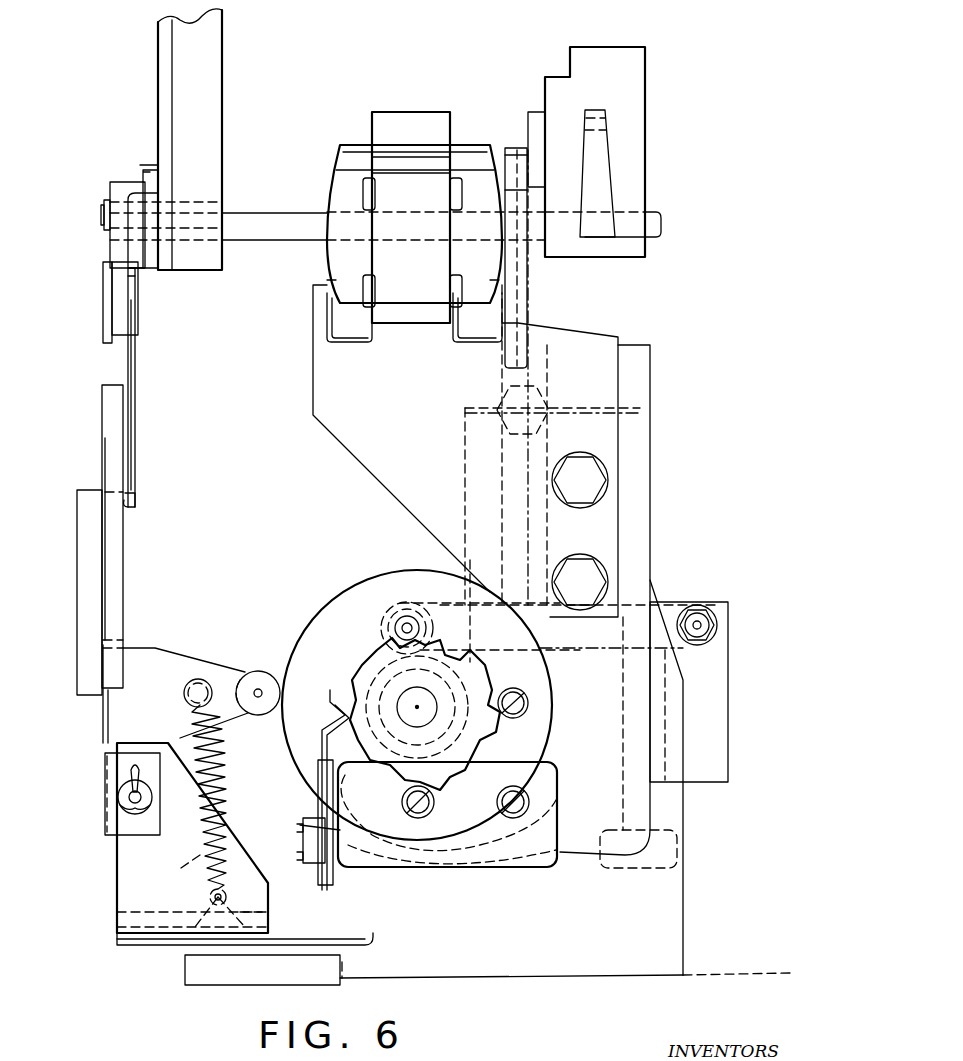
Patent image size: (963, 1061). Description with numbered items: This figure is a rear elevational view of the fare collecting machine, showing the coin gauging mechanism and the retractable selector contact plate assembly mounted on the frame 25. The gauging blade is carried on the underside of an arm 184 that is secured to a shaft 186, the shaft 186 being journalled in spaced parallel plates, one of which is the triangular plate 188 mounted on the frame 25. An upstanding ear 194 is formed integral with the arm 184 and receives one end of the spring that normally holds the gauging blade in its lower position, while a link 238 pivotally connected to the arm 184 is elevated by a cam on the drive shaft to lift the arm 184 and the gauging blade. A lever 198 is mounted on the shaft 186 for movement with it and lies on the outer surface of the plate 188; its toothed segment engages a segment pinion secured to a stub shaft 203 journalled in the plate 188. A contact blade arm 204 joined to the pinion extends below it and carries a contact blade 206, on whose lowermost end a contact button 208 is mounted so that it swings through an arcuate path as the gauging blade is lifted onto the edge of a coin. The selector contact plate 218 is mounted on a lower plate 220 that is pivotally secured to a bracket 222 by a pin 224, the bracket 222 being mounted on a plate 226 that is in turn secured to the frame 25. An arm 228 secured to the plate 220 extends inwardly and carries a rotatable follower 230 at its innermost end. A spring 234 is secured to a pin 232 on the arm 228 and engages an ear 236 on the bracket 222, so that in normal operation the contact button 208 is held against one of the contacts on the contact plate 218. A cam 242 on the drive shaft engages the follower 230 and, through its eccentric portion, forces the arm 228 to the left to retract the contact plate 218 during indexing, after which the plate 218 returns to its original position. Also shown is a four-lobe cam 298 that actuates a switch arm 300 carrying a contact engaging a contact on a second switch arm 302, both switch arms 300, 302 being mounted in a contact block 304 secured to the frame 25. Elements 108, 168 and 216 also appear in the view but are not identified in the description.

The frame 25 is at (192, 968).
The mounting plate 108 is at (313, 360).
The shaft hub 168 is at (425, 712).
The arm 184 is at (628, 98).
The shaft 186 is at (265, 232).
The plate 188 is at (205, 110).
The upstanding ear 194 is at (600, 158).
The lever 198 is at (133, 248).
The stub shaft 203 is at (104, 216).
The contact blade arm 204 is at (118, 305).
The contact blade 206 is at (138, 442).
The contact button 208 is at (128, 506).
The switch assembly 216 is at (52, 471).
The selector contact plate 218 is at (112, 558).
The lower plate 220 is at (103, 725).
The bracket 222 is at (117, 856).
The pin 224 is at (128, 790).
The plate 226 is at (120, 945).
The arm 228 is at (190, 668).
The follower 230 is at (262, 672).
The pin 232 is at (184, 693).
The spring 234 is at (200, 858).
The ear 236 is at (262, 912).
The link 238 is at (530, 298).
The cam 242 is at (327, 592).
The four-lobe cam 298 is at (352, 667).
The switch arm 300 is at (326, 690).
The switch arm 302 is at (320, 762).
The contact block 304 is at (305, 840).